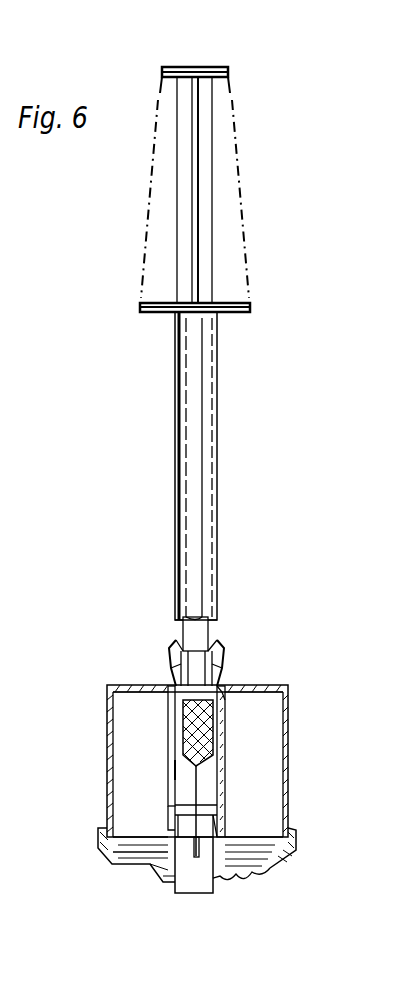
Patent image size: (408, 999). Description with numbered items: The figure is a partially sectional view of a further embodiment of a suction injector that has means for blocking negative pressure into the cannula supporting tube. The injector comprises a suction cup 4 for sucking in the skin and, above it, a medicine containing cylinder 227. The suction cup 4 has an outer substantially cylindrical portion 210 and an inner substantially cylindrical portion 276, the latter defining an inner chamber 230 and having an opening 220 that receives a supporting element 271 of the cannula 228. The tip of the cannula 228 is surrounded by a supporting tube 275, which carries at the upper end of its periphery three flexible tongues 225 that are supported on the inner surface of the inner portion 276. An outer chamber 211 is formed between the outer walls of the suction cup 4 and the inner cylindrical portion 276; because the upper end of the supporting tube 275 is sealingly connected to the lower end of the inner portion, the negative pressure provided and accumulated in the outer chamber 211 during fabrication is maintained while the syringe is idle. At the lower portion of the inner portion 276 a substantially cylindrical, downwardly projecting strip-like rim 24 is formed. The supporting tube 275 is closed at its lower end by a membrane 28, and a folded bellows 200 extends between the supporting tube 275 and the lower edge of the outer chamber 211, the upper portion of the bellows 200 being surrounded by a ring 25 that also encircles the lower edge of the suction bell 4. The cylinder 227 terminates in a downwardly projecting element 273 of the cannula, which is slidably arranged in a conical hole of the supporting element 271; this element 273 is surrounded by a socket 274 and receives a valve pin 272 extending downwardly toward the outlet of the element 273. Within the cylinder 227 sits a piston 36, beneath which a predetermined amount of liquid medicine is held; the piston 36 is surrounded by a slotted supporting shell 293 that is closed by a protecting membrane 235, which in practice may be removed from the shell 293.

The suction cup 4 is at (90, 872).
The strip-like rim 24 is at (263, 873).
The ring 25 is at (293, 841).
The membrane 28 is at (190, 895).
The piston 36 is at (213, 68).
The folded bellows 200 is at (152, 878).
The outer substantially cylindrical portion 210 is at (262, 684).
The outer chamber 211 is at (270, 707).
The opening 220 is at (227, 688).
The flexible tongues 225 is at (168, 823).
The medicine containing cylinder 227 is at (207, 409).
The cannula 228 is at (223, 788).
The inner chamber 230 is at (178, 786).
The protecting membrane 235 is at (247, 249).
The supporting element 271 is at (226, 751).
The valve pin 272 is at (182, 728).
The downwardly projecting element 273 is at (166, 669).
The socket 274 is at (168, 668).
The supporting tube 275 is at (222, 829).
The inner substantially cylindrical portion 276 is at (175, 770).
The slotted supporting shell 293 is at (205, 211).